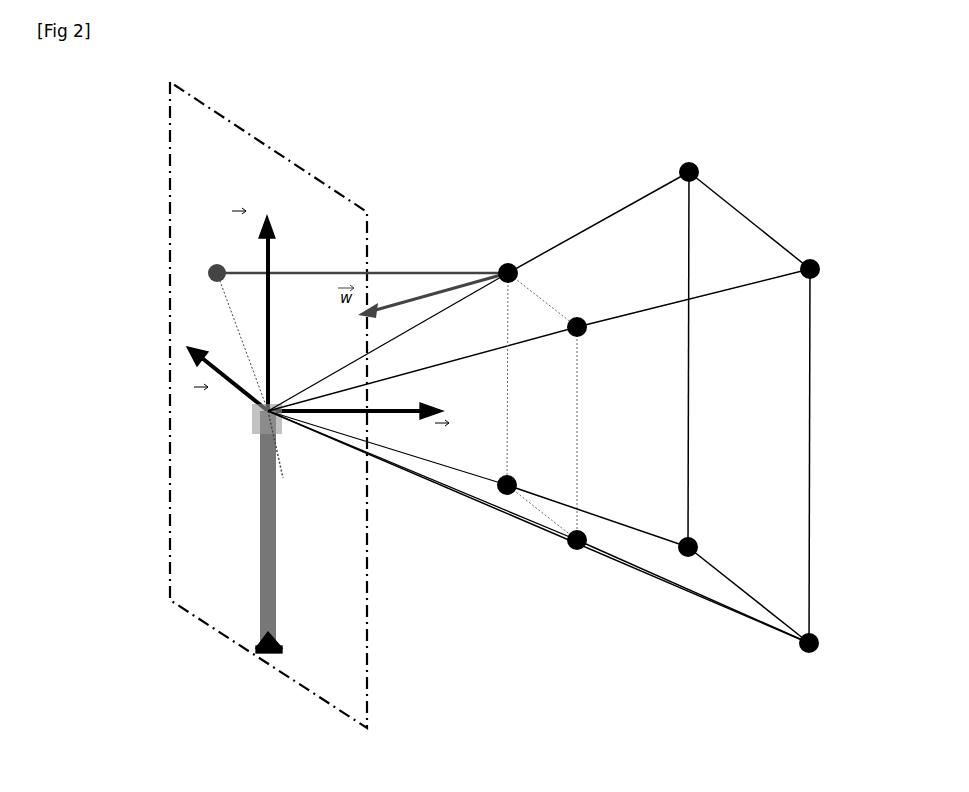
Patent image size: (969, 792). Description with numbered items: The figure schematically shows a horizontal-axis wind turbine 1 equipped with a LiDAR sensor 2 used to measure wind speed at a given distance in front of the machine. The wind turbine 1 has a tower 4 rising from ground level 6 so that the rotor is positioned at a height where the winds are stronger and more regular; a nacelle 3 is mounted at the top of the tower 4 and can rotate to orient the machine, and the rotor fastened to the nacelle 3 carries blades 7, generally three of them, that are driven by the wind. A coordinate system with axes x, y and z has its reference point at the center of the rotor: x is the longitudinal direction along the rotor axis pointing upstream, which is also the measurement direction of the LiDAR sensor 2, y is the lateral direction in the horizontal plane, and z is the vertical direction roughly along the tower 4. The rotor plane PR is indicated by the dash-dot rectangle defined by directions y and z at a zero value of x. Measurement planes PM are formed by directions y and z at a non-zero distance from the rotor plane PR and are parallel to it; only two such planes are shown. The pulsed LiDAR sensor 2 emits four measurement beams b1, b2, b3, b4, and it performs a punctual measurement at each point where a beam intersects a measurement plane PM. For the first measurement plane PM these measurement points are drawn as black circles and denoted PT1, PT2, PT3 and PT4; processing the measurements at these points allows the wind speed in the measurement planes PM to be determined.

The wind turbine 1 is at (304, 246).
The rotor plane PR is at (206, 405).
The LiDAR sensor 2 is at (240, 404).
The nacelle 3 is at (254, 432).
The tower 4 is at (252, 518).
The ground level 6 is at (252, 636).
The blades 7 is at (288, 495).
The measurement point PT1 is at (497, 265).
The measurement point PT2 is at (582, 317).
The measurement point PT3 is at (567, 550).
The measurement point PT4 is at (497, 490).
The measurement beam b1 is at (590, 218).
The measurement beam b2 is at (755, 283).
The measurement beam b3 is at (527, 528).
The measurement beam b4 is at (647, 530).
The measurement planes PM is at (560, 453).